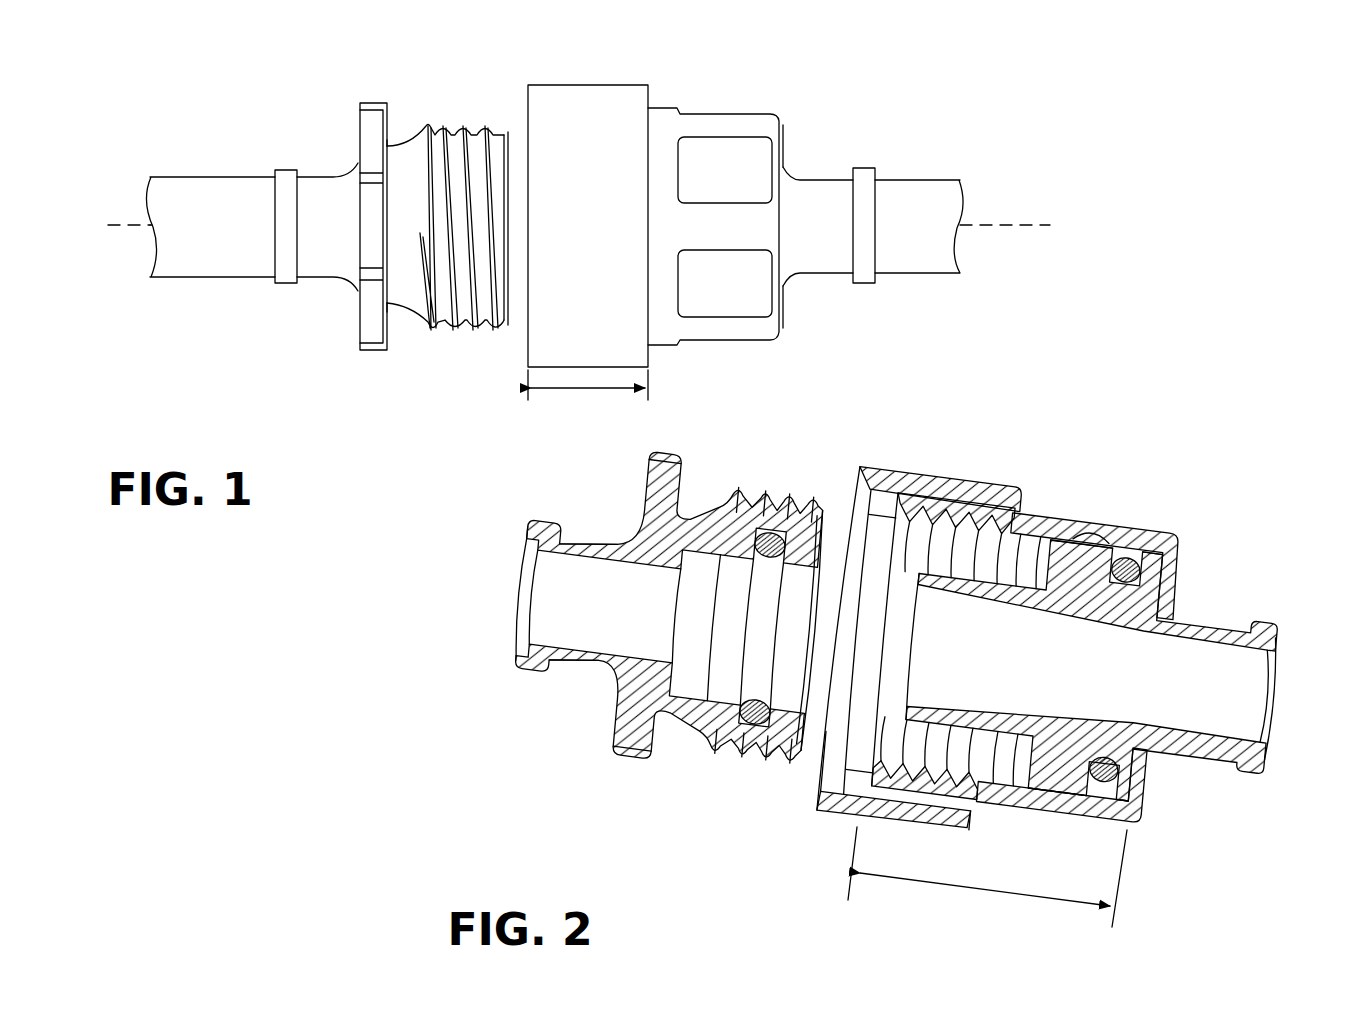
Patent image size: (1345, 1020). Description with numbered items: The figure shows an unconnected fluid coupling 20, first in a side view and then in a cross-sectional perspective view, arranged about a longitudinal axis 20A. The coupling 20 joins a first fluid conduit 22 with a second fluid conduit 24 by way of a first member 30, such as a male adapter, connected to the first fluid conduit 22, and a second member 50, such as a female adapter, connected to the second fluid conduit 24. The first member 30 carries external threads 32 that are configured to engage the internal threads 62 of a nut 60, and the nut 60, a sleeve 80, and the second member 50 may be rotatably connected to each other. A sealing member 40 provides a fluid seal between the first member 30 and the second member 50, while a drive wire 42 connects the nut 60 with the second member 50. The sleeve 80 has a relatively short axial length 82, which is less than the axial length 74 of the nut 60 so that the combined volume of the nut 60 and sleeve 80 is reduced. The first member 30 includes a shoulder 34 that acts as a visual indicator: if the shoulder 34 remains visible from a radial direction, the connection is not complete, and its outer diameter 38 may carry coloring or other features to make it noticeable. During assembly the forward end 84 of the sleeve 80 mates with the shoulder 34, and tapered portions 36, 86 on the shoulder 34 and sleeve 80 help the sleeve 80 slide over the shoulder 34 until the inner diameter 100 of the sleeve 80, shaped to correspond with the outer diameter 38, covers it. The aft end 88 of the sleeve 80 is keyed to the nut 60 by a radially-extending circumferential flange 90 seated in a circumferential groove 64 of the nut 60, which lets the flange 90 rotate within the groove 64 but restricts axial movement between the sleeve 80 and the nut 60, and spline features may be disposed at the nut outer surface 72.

In FIG. 1, the coupling 20 is at (858, 114).
In FIG. 2, the coupling 20 is at (522, 703).
In FIG. 1, the longitudinal axis 20A is at (1015, 225).
In FIG. 1, the first fluid conduit 22 is at (213, 198).
In FIG. 1, the second fluid conduit 24 is at (918, 198).
In FIG. 1, the first member 30 is at (410, 335).
In FIG. 2, the first member 30 is at (563, 514).
In FIG. 1, the threads 32 is at (440, 125).
In FIG. 2, the threads 32 is at (738, 494).
In FIG. 1, the shoulder 34 is at (343, 328).
In FIG. 2, the shoulder 34 is at (605, 724).
In FIG. 1, the tapered portion 36 is at (387, 135).
In FIG. 1, the outer diameter 38 is at (375, 353).
In FIG. 2, the outer diameter 38 is at (627, 758).
In FIG. 2, the sealing member 40 is at (768, 520).
In FIG. 2, the drive wire 42 is at (1125, 575).
In FIG. 1, the second member 50 is at (824, 291).
In FIG. 2, the second member 50 is at (1180, 760).
In FIG. 1, the nut 60 is at (720, 113).
In FIG. 2, the nut 60 is at (1057, 500).
In FIG. 2, the threads 62 is at (985, 535).
In FIG. 2, the circumferential groove 64 is at (985, 530).
In FIG. 2, the nut outer surface 72 is at (1150, 540).
In FIG. 2, the axial length 74 is at (1003, 893).
In FIG. 1, the sleeve 80 is at (560, 85).
In FIG. 2, the sleeve 80 is at (870, 820).
In FIG. 1, the axial length 82 is at (615, 390).
In FIG. 2, the forward end 84 is at (868, 455).
In FIG. 2, the tapered portion 86 is at (835, 710).
In FIG. 2, the aft end 88 is at (989, 833).
In FIG. 2, the circumferential flange 90 is at (945, 515).
In FIG. 2, the inner diameter 100 is at (878, 548).